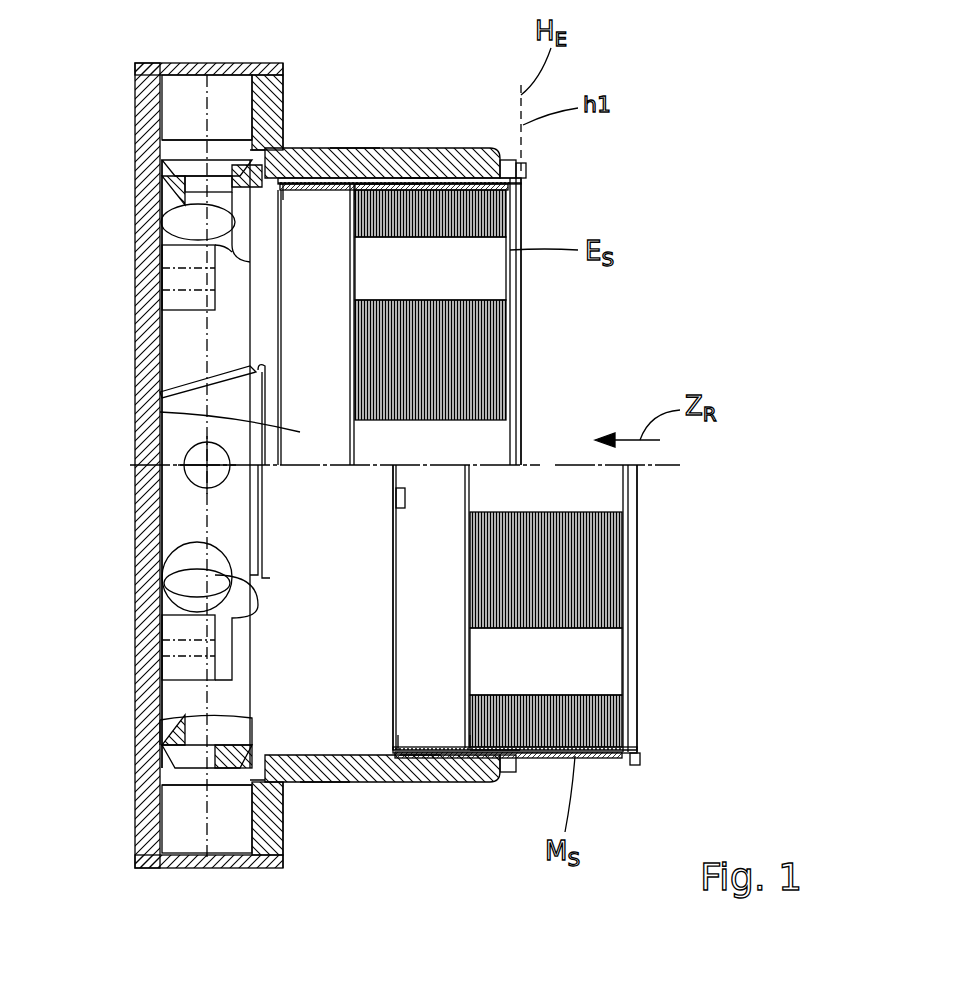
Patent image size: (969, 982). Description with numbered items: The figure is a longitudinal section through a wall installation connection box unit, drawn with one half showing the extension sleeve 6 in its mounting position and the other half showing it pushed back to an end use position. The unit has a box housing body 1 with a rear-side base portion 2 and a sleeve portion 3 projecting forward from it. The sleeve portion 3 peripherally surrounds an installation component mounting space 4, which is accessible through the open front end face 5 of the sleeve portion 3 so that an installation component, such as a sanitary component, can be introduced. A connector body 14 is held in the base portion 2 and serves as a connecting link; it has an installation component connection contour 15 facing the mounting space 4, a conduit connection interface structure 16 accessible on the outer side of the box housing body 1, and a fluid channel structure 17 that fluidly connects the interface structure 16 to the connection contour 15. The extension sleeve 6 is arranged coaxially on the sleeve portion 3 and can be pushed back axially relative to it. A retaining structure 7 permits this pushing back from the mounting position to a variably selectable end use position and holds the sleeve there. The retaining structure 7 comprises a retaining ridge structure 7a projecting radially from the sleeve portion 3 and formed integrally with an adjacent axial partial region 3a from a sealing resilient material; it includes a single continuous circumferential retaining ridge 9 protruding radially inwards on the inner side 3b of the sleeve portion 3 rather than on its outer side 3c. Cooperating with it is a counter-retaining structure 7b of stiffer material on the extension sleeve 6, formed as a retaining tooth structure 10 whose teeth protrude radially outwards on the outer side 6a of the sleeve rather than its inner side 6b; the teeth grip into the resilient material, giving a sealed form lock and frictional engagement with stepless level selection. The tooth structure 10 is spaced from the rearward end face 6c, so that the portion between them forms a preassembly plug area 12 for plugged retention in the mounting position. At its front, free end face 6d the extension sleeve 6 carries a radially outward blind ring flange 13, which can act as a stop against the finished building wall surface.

The box housing body 1 is at (288, 160).
The base portion 2 is at (280, 105).
The sleeve portion 3 is at (338, 766).
The axial partial region 3a is at (405, 180).
The inner side 3b is at (325, 756).
The outer side 3c is at (352, 148).
The installation component mounting space 4 is at (160, 412).
The open front end face 5 is at (515, 168).
The extension sleeve 6 is at (530, 478).
The outer side 6a is at (470, 178).
The inner side 6b is at (315, 186).
The rearward end face 6c is at (272, 382).
The front face side 6d is at (522, 198).
The retaining structure 7 is at (420, 184).
The retaining ridge structure 7a is at (395, 184).
The counter-retaining structure 7b is at (362, 186).
The retaining ridge 9 is at (400, 181).
The retaining tooth structure 10 is at (278, 185).
The preassembly plug area 12 is at (288, 192).
The blind ring flange 13 is at (522, 175).
The connector body 14 is at (190, 190).
The installation component connection contour 15 is at (172, 340).
The conduit connection interface structure 16 is at (175, 78).
The fluid channel structure 17 is at (230, 196).